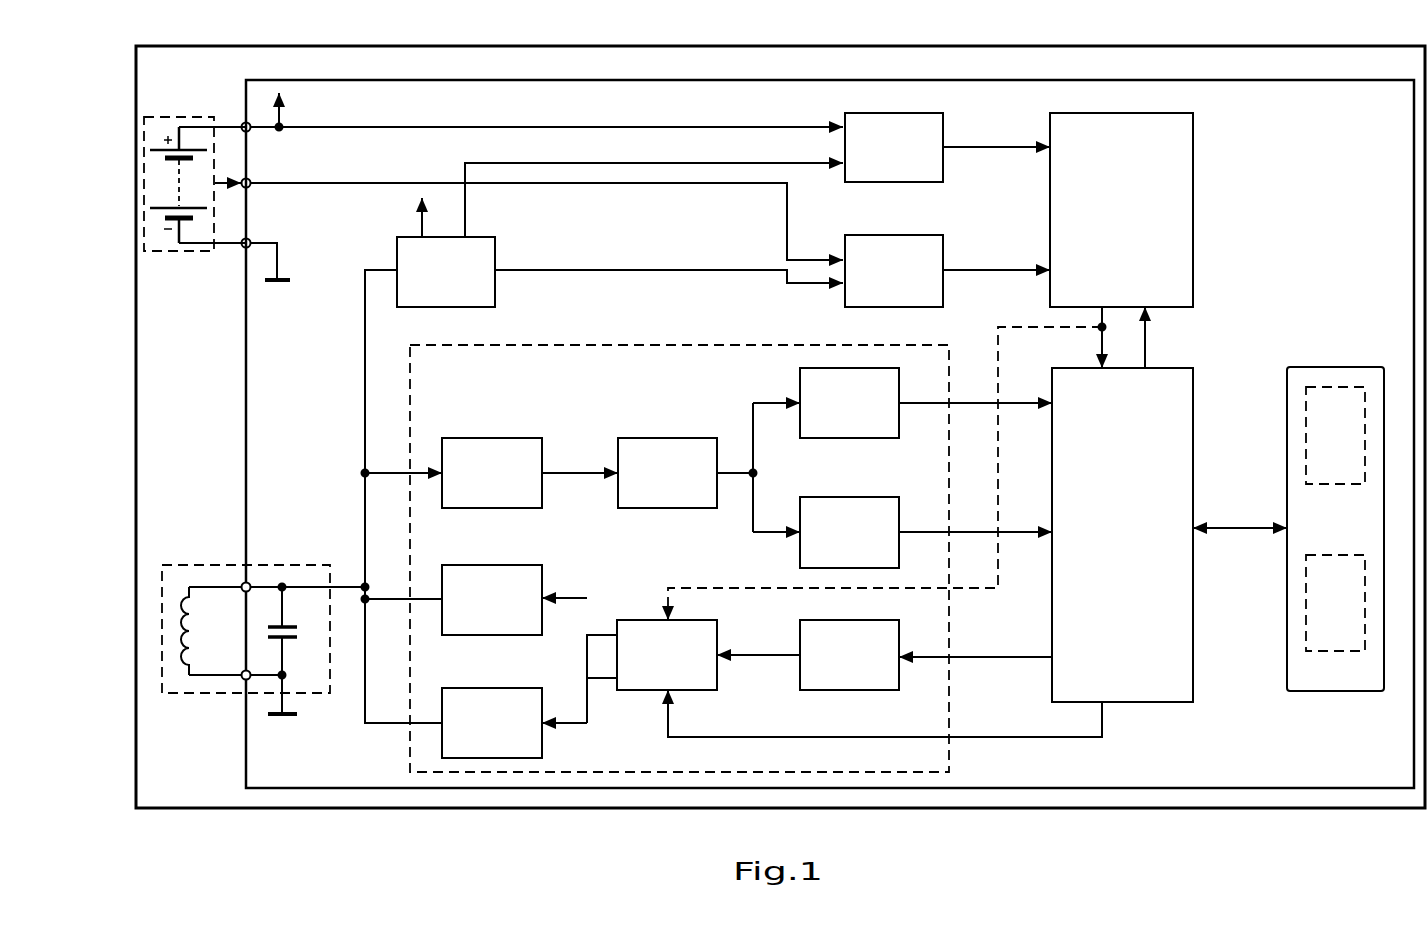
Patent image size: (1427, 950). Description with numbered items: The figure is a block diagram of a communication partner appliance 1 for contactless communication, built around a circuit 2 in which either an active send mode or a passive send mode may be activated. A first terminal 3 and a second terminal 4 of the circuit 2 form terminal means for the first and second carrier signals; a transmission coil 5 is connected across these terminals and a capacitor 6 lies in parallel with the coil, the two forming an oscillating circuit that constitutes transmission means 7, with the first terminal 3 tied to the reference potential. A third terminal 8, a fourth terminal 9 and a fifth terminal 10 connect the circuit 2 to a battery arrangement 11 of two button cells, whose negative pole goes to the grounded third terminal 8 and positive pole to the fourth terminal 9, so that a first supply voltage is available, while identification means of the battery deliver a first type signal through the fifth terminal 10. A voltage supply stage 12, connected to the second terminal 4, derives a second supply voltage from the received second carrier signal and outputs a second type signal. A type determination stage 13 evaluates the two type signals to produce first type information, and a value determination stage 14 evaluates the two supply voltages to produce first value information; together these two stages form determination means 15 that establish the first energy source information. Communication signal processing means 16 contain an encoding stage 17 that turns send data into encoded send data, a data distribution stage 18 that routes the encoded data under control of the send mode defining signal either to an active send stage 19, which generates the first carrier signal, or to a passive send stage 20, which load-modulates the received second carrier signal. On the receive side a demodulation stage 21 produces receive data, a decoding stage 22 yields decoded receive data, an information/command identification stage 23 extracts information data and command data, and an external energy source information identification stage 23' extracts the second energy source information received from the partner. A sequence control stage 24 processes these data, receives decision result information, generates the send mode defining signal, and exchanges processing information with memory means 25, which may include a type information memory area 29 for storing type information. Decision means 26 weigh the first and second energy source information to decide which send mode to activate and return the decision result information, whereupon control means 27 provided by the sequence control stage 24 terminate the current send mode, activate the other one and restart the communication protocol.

The communication partner appliance 1 is at (455, 812).
The circuit 2 is at (243, 372).
The first terminal 3 is at (243, 674).
The second terminal 4 is at (243, 590).
The transmission coil 5 is at (180, 662).
The capacitor 6 is at (297, 623).
The transmission means 7 is at (291, 564).
The third terminal 8 is at (243, 245).
The fourth terminal 9 is at (249, 131).
The fifth terminal 10 is at (249, 187).
The battery arrangement 11 is at (167, 115).
The voltage supply stage 12 is at (447, 287).
The type determination stage 13 is at (912, 255).
The value determination stage 14 is at (915, 130).
The determination means 15 is at (830, 108).
The communication signal processing means 16 is at (663, 345).
The encoding stage 17 is at (845, 672).
The data distribution stage 18 is at (637, 645).
The active send stage 19 is at (488, 598).
The passive send stage 20 is at (492, 725).
The demodulation stage 21 is at (490, 470).
The decoding stage 22 is at (670, 470).
The information/command identification stage 23 is at (870, 519).
The external energy source information identification stage 23' is at (869, 394).
The sequence control stage 24 is at (1160, 403).
The memory means 25 is at (1302, 378).
The decision means 26 is at (1160, 158).
The control means 27 is at (1236, 572).
The type information memory area 29 is at (1352, 385).